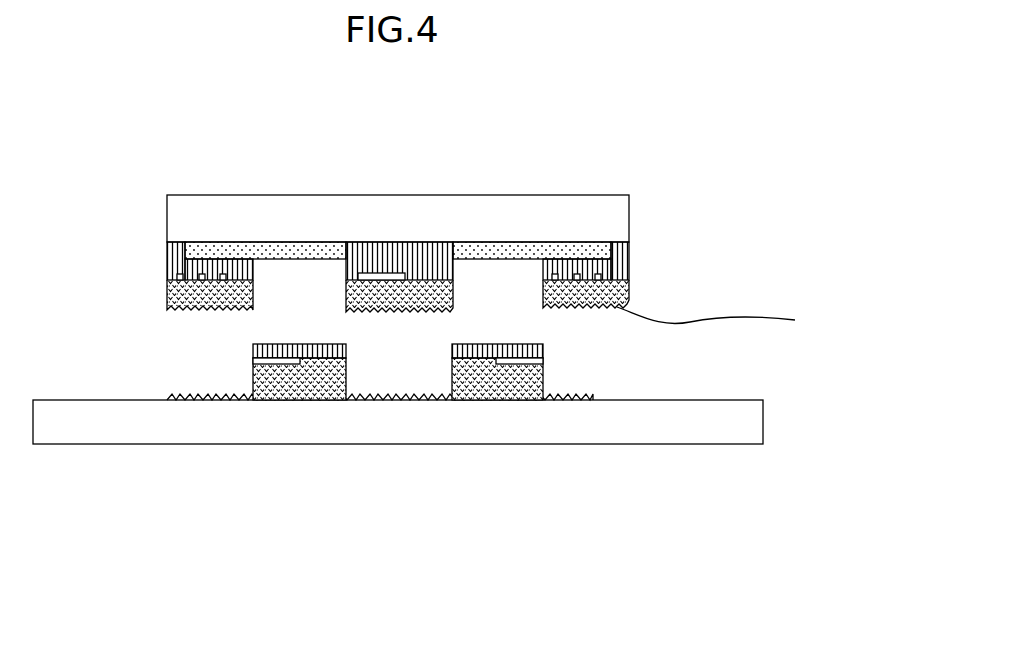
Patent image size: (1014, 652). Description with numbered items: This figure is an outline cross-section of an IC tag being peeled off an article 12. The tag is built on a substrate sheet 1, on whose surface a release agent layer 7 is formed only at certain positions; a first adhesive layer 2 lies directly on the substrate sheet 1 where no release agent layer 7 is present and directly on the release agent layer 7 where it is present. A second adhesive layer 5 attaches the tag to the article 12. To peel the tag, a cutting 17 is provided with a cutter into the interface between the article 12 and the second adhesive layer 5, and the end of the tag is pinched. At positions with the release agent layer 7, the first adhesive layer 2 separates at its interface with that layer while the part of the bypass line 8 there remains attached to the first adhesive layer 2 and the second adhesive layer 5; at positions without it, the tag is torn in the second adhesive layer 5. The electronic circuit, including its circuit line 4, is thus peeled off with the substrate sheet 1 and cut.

The substrate sheet 1 is at (608, 220).
The first adhesive layer 2 is at (421, 243).
The circuit line 4 is at (176, 276).
The second adhesive layer 5 is at (630, 290).
The release agent layer 7 is at (245, 250).
The bypass line 8 is at (371, 272).
The article 12 is at (676, 420).
The cutting 17 is at (722, 320).